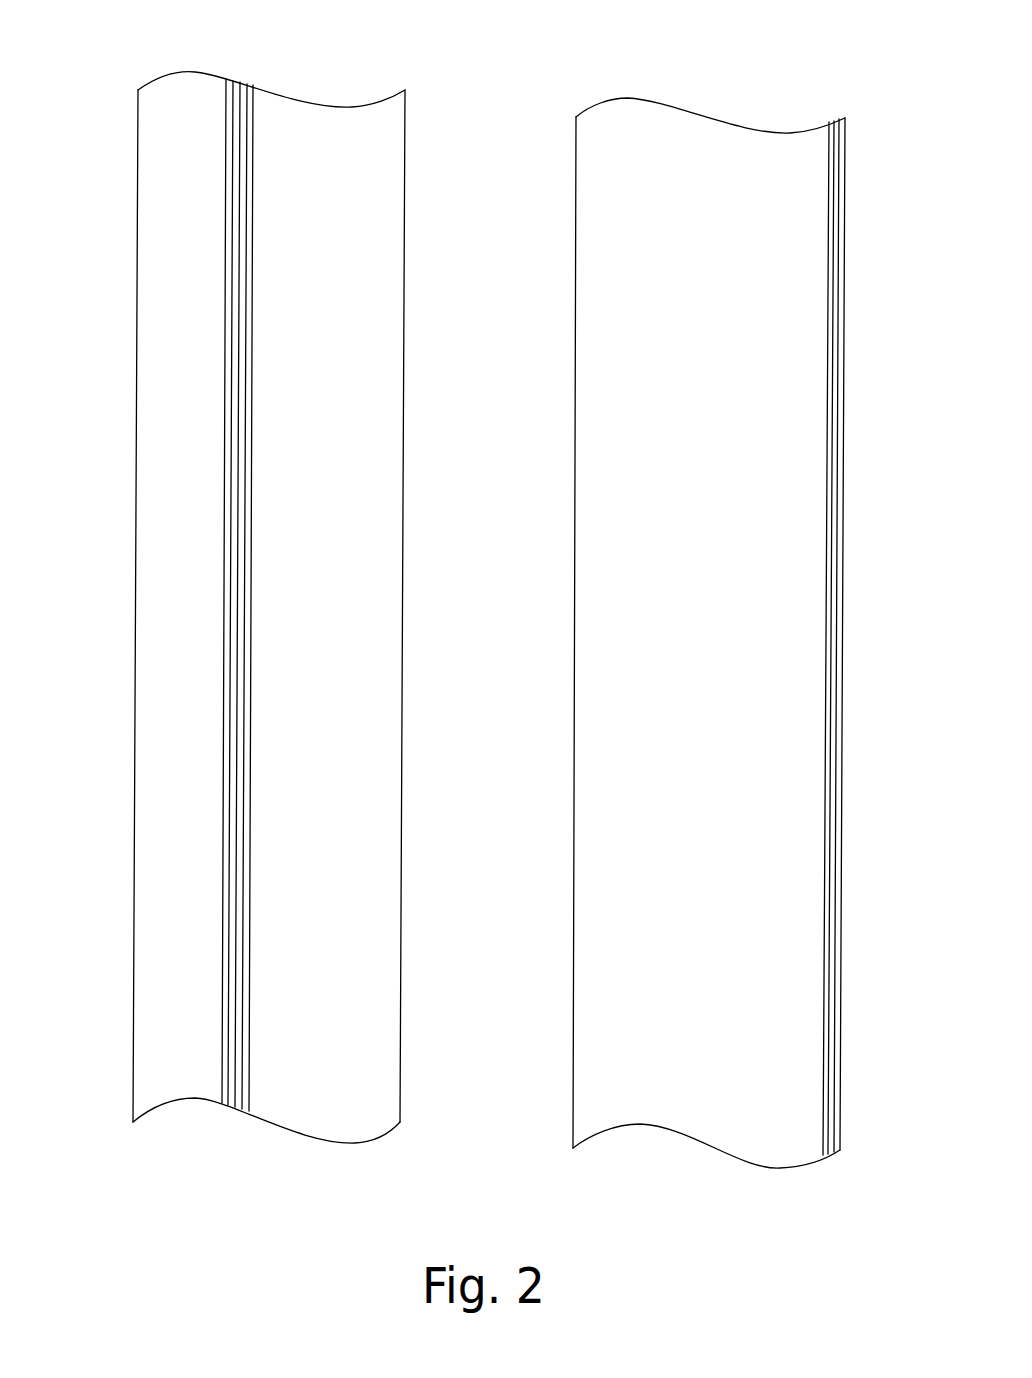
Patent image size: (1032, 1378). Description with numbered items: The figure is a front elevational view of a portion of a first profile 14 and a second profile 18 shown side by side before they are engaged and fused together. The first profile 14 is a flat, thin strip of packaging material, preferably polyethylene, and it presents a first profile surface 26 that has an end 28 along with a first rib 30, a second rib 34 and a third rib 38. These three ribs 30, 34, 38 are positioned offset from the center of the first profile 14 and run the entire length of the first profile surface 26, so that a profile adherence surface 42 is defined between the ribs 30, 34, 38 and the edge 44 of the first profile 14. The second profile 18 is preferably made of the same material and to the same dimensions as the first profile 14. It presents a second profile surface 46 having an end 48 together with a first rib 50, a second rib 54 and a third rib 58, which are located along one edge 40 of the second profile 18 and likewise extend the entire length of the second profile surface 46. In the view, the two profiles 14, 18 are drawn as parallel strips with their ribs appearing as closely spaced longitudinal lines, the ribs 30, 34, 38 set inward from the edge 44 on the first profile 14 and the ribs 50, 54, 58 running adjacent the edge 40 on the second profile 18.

The first profile 14 is at (256, 597).
The second profile 18 is at (709, 637).
The first profile surface 26 is at (402, 910).
The end 28 is at (310, 98).
The first rib 30 is at (222, 1100).
The second rib 34 is at (234, 1108).
The third rib 38 is at (249, 1104).
The edge 40 is at (846, 681).
The profile adherence surface 42 is at (150, 905).
The edge 44 is at (135, 612).
The second profile surface 46 is at (590, 880).
The end 48 is at (650, 113).
The first rib 50 is at (813, 1155).
The second rib 54 is at (827, 1162).
The third rib 58 is at (842, 1135).